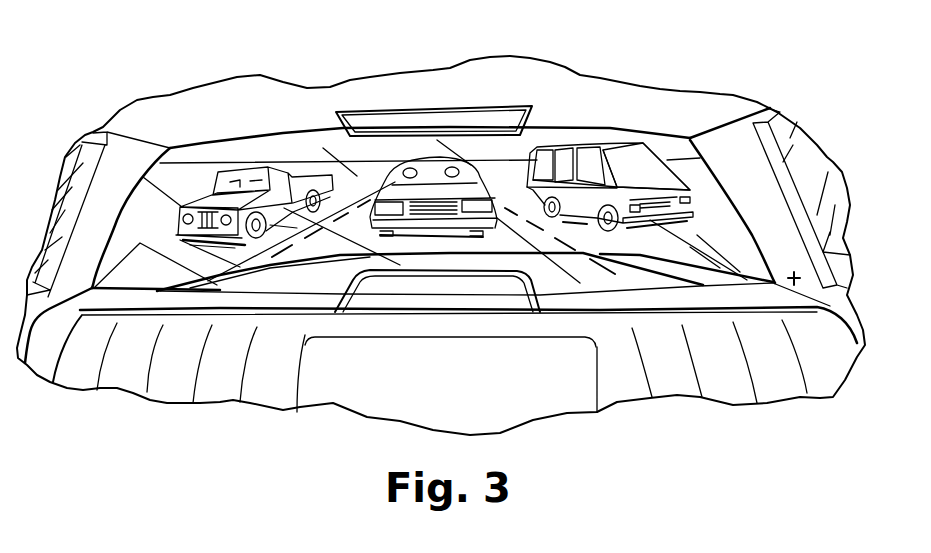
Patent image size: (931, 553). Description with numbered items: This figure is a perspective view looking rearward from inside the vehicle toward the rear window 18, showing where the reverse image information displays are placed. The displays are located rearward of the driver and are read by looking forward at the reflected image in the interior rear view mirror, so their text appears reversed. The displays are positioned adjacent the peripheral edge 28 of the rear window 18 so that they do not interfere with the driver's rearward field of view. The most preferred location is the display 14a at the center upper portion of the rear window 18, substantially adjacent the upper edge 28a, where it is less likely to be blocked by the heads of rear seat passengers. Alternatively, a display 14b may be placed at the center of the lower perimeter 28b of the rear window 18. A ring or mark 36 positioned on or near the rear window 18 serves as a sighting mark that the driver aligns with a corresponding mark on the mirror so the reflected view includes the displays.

The peripheral edge 28 is at (450, 233).
The upper edge 28a is at (598, 125).
The lower perimeter 28b is at (693, 288).
The rear window 18 is at (287, 150).
The display 14a is at (450, 108).
The display 14b is at (488, 297).
The ring or mark 36 is at (794, 277).